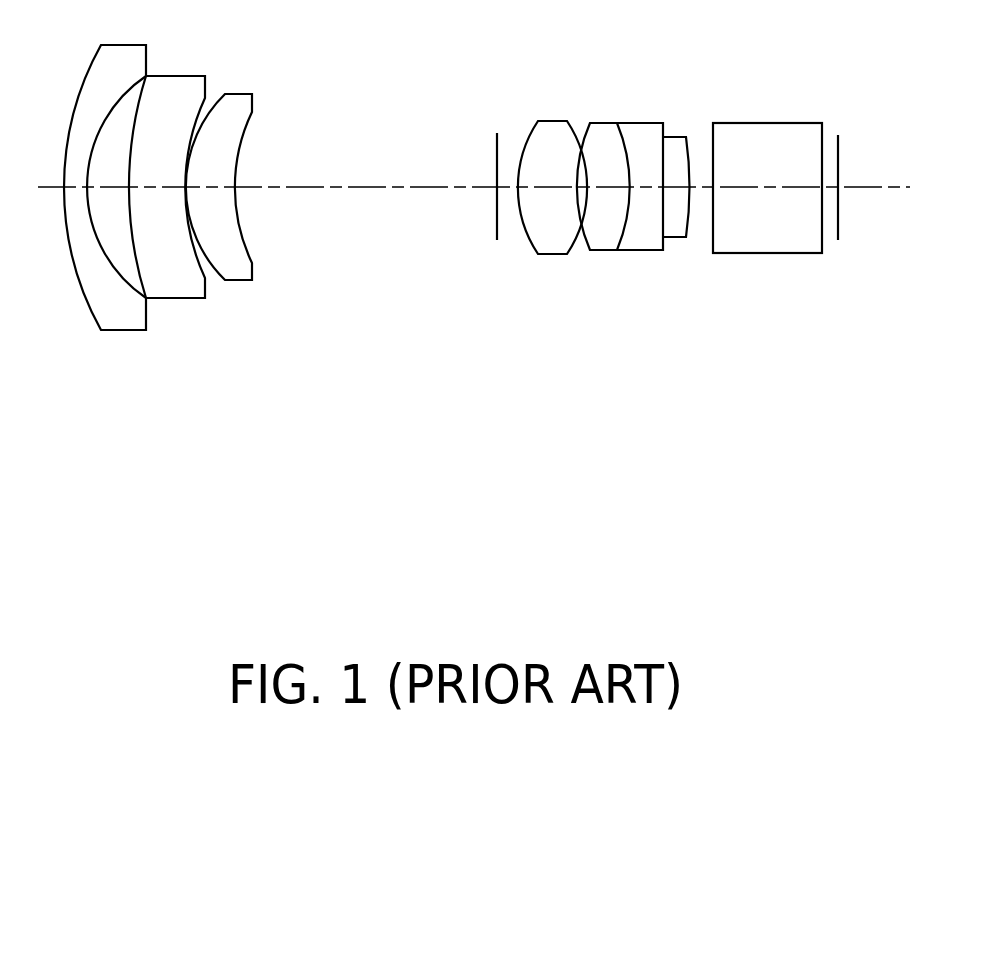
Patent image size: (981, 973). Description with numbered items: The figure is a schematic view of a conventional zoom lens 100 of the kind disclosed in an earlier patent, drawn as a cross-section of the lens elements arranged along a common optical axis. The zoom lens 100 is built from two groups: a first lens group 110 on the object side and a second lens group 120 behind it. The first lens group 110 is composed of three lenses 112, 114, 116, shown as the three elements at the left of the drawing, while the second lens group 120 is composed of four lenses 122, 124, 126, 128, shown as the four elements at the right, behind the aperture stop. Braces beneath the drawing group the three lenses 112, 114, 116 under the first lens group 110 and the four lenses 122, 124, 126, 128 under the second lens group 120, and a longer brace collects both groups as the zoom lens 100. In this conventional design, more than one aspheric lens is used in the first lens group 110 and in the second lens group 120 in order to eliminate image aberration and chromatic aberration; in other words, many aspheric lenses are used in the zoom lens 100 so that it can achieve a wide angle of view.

The zoom lens 100 is at (462, 317).
The first lens group 110 is at (168, 253).
The lens 112 is at (125, 318).
The lens 114 is at (178, 293).
The lens 116 is at (224, 243).
The second lens group 120 is at (617, 287).
The lens 122 is at (554, 242).
The lens 124 is at (608, 235).
The lens 126 is at (645, 240).
The lens 128 is at (696, 257).